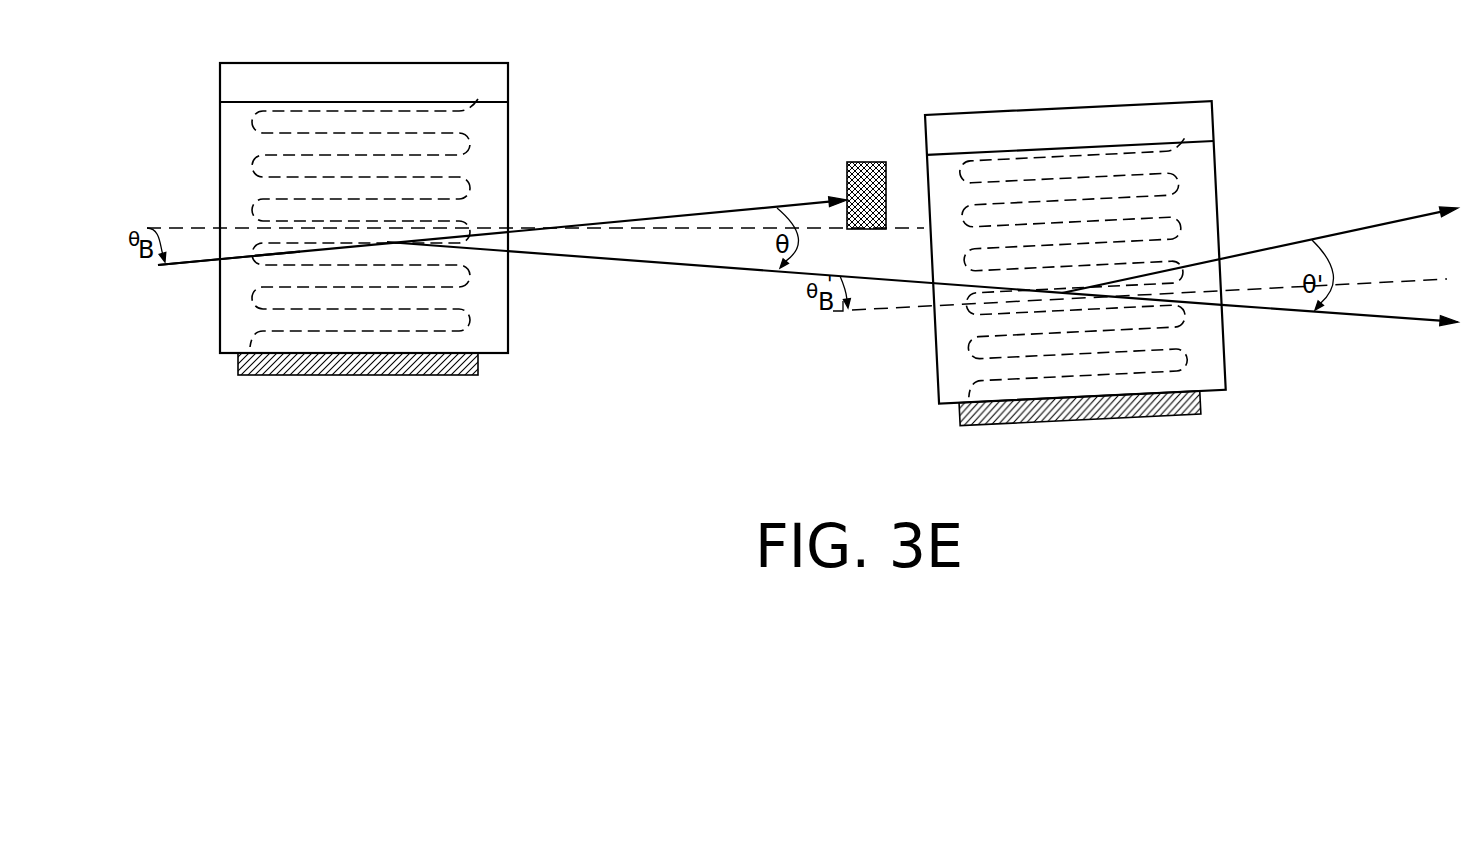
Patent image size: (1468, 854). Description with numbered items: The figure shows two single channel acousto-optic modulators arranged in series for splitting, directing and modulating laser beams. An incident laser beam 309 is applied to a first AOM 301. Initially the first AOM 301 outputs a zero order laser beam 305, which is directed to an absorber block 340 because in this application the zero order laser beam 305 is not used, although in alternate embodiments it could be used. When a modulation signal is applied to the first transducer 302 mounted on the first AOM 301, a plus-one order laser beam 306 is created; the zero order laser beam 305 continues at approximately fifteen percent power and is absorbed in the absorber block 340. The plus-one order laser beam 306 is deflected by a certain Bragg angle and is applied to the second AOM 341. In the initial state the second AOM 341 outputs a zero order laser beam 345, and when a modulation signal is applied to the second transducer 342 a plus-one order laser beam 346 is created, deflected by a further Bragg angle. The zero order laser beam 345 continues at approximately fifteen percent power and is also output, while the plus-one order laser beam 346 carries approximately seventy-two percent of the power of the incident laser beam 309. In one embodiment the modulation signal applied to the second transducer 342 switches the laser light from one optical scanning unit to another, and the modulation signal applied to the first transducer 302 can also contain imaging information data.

The first AOM 301 is at (512, 322).
The first transducer 302 is at (448, 377).
The zero order laser beam 305 is at (678, 213).
The +1 order laser beam 306 is at (672, 264).
The incident laser beam 309 is at (185, 264).
The absorber block 340 is at (846, 178).
The second AOM 341 is at (1225, 367).
The second transducer 342 is at (1182, 415).
The zero order laser beam 345 is at (1367, 315).
The +1 order laser beam 346 is at (1378, 223).